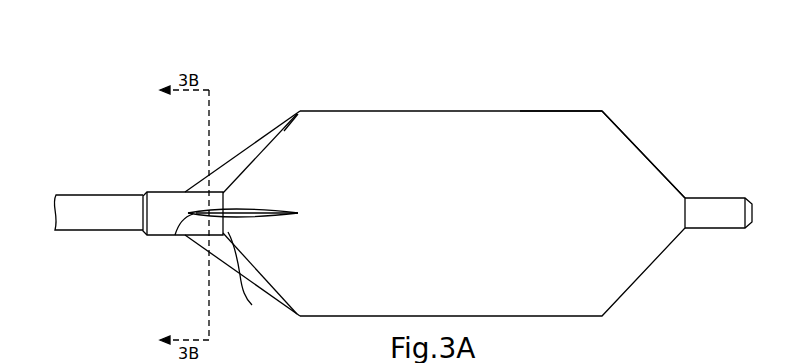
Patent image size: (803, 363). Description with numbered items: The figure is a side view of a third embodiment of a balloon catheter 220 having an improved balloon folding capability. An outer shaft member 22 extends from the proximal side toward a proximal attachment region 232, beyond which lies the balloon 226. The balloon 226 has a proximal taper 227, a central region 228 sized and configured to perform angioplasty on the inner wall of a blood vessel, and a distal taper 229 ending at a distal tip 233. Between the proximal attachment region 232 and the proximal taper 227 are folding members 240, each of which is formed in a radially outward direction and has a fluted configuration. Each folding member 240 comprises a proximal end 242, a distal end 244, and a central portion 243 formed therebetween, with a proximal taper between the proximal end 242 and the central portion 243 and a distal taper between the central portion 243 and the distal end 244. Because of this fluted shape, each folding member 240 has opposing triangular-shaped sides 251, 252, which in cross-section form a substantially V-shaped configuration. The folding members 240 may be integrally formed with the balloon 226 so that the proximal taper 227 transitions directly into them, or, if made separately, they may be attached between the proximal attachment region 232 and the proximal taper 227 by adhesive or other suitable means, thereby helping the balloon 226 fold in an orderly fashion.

The balloon catheter 220 is at (101, 160).
The outer shaft member 22 is at (93, 212).
The proximal attachment region 232 is at (164, 198).
The proximal end 242 is at (173, 236).
The folding member 240 is at (236, 150).
The proximal taper 227 is at (283, 131).
The central portion 243 is at (242, 279).
The triangular-shaped side 251 is at (233, 206).
The triangular-shaped side 252 is at (236, 222).
The distal end 244 is at (296, 213).
The balloon 226 is at (503, 154).
The central region 228 is at (575, 111).
The distal taper 229 is at (650, 158).
The distal tip 233 is at (716, 205).